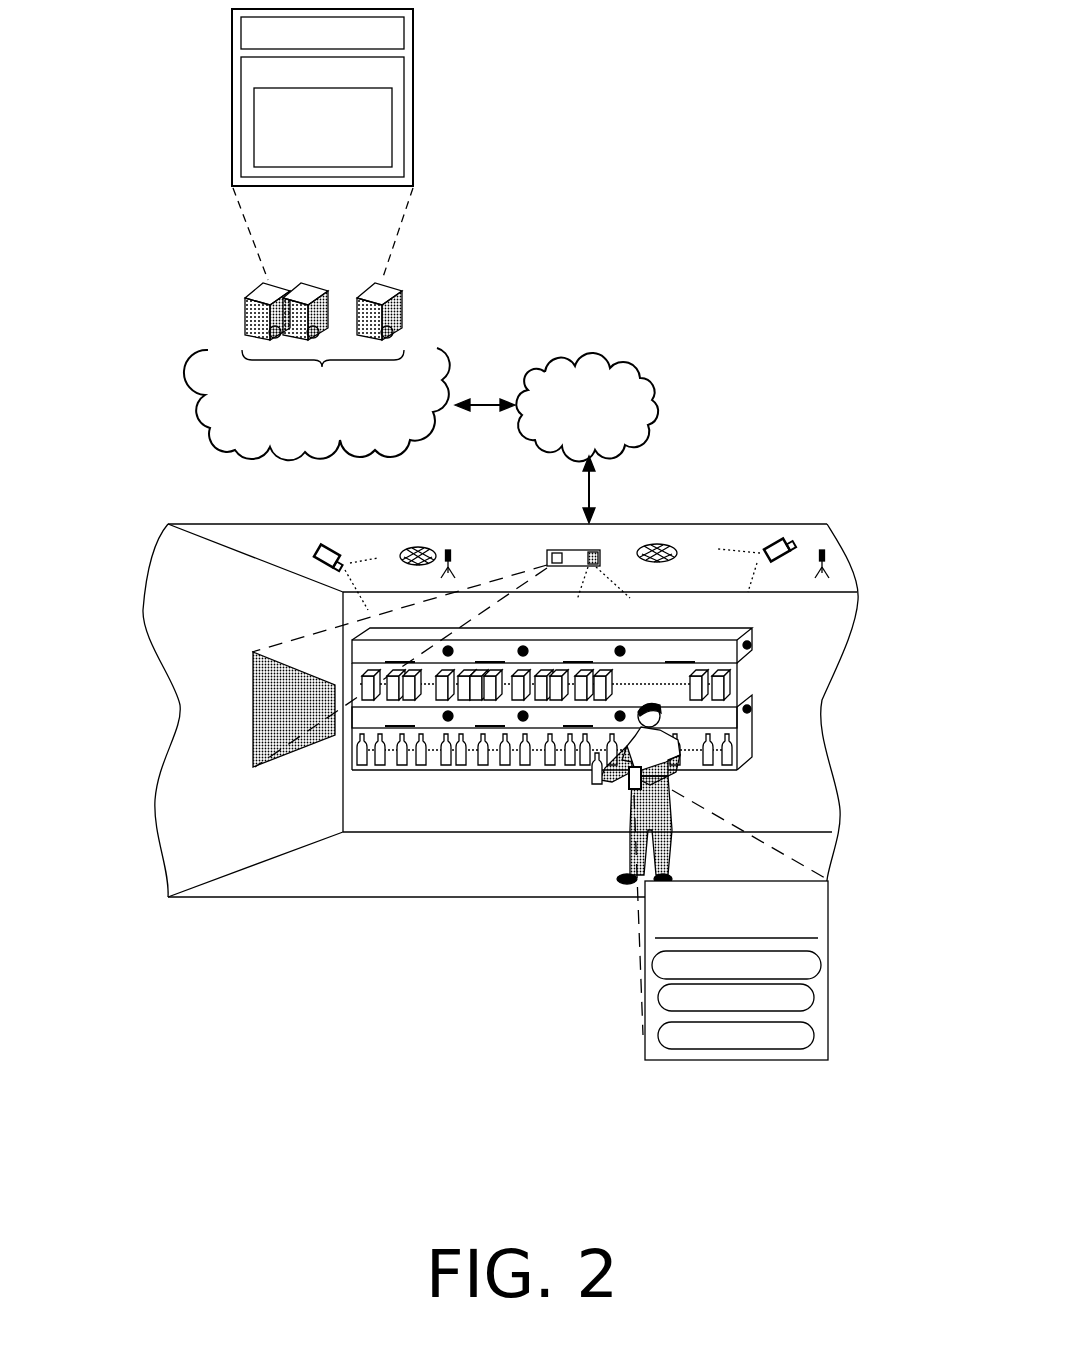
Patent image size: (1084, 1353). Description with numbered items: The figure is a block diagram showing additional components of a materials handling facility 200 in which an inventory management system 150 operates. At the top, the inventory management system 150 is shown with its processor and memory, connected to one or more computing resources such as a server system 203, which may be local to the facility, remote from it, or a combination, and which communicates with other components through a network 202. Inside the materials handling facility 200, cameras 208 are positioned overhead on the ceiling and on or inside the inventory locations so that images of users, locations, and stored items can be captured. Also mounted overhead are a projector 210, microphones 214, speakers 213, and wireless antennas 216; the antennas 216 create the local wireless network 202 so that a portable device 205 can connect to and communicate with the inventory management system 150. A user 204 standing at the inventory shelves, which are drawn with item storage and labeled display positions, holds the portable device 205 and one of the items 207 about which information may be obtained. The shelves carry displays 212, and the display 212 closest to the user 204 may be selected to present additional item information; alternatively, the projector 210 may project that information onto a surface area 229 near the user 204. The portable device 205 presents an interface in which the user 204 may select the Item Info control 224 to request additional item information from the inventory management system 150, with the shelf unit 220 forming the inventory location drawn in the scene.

The inventory management system 150 is at (322, 144).
The server system 203 is at (317, 371).
The network 202 is at (587, 407).
The materials handling facility 200 is at (827, 524).
The cameras 208 is at (327, 547).
The microphones 214 is at (412, 548).
The wireless antennas 216 is at (446, 553).
The projector 210 is at (572, 550).
The speakers 213 is at (657, 545).
The surface area 229 is at (208, 842).
The inventory shelf 220 is at (487, 770).
The displays 212 is at (540, 685).
The user 204 is at (672, 785).
The items 207 is at (595, 782).
The portable device 205 is at (630, 795).
The Item Info control 224 is at (828, 968).